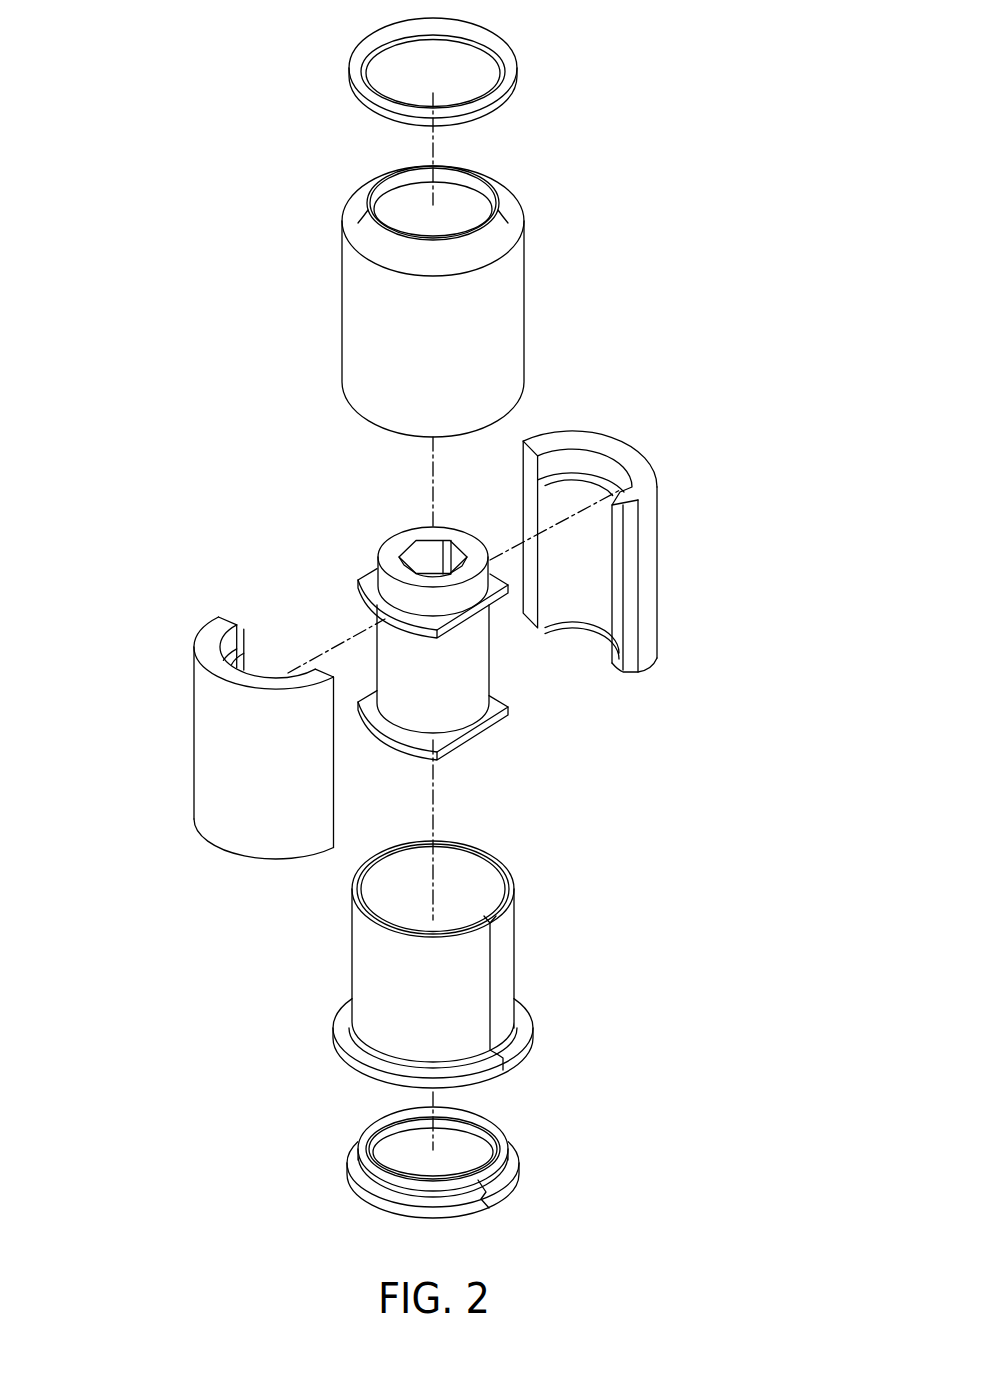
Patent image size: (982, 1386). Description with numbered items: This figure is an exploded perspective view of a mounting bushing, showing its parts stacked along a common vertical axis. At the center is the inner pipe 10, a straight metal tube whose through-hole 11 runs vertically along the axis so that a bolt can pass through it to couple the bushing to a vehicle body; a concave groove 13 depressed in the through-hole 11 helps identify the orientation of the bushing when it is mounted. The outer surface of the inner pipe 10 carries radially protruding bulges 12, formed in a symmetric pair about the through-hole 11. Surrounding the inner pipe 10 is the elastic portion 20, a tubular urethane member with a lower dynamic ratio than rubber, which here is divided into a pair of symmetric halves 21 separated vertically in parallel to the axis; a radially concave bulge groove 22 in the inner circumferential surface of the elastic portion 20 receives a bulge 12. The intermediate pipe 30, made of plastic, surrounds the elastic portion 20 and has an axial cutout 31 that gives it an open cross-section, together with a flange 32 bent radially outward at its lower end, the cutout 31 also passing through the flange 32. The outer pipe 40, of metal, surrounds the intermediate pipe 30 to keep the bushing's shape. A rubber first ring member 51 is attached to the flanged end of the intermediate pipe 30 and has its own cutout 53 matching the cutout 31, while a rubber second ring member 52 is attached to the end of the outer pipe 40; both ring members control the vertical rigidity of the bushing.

The inner pipe 10 is at (481, 627).
The through-hole 11 is at (413, 553).
The bulge 12 is at (502, 698).
The concave groove 13 is at (457, 550).
The elastic portion 20 is at (436, 616).
The half 21 is at (420, 616).
The bulge groove 22 is at (572, 470).
The intermediate pipe 30 is at (473, 964).
The cutout 31 is at (493, 972).
The flange 32 is at (518, 1040).
The outer pipe 40 is at (510, 305).
The first ring member 51 is at (459, 1162).
The second ring member 52 is at (516, 61).
The cutout 53 is at (492, 1191).